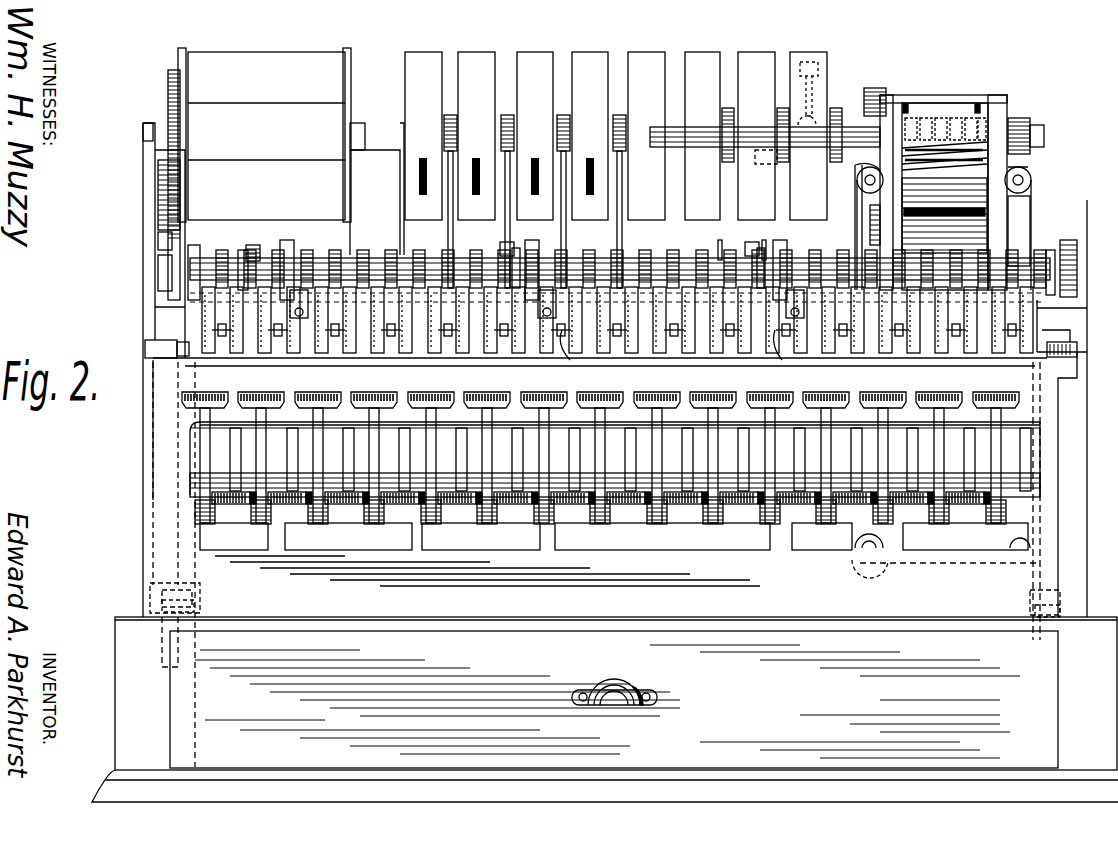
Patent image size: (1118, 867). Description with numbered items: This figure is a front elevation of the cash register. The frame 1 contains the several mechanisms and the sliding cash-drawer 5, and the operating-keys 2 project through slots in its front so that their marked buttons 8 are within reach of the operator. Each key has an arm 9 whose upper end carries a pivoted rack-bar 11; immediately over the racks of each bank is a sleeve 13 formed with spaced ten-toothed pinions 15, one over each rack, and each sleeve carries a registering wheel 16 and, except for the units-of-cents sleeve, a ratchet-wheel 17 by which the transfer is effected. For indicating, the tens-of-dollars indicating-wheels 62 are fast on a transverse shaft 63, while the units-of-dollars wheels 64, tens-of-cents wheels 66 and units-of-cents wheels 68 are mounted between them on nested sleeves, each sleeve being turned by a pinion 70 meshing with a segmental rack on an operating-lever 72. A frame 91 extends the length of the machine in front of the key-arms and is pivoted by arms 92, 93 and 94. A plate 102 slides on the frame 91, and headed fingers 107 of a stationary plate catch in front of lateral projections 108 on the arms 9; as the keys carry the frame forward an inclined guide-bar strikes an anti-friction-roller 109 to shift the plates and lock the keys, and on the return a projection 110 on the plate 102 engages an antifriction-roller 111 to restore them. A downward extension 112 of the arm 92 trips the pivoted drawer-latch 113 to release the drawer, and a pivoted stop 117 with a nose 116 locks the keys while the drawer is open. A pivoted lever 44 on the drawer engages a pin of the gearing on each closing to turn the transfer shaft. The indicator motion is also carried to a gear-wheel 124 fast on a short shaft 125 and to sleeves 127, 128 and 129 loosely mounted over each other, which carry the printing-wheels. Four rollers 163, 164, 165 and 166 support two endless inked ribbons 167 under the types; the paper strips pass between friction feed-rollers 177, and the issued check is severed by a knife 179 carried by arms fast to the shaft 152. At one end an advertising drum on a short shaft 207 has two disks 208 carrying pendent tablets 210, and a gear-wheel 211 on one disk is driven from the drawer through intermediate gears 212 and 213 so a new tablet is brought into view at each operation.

The frame 1 is at (1093, 395).
The operating-keys 2 is at (270, 432).
The sliding cash-drawer 5 is at (614, 699).
The buttons 8 is at (252, 396).
The arm 9 is at (345, 432).
The rack-bar 11 is at (318, 287).
The sleeve 13 is at (157, 268).
The pinions 15 is at (366, 258).
The registering wheel 16 is at (200, 250).
The ratchet-wheel 17 is at (246, 250).
The pivoted lever 44 is at (170, 645).
The tens-of-dollars indicating-wheels 62 is at (424, 43).
The transverse shaft 63 is at (400, 120).
The units-of-dollars indicating-wheels 64 is at (478, 55).
The tens-of-cents indicating-wheels 66 is at (538, 55).
The units-of-cents wheels 68 is at (594, 55).
The pinion 70 is at (450, 113).
The operating-levers 72 is at (550, 219).
The frame 91 is at (615, 437).
The arm 92 is at (190, 438).
The arm 93 is at (412, 537).
The arm 94 is at (903, 537).
The plate 102 is at (482, 330).
The headed fingers 107 is at (669, 354).
The lateral projections 108 is at (495, 330).
The anti-friction-roller 109 is at (1078, 345).
The projection 110 is at (172, 362).
The antifriction-roller 111 is at (148, 349).
The downward extension 112 is at (180, 547).
The drawer-latch 113 is at (196, 610).
The nose 116 is at (950, 566).
The pivoted stop 117 is at (1035, 610).
The gear-wheel 124 is at (728, 106).
The short shaft 125 is at (723, 240).
The sleeve 127 is at (761, 240).
The sleeve 128 is at (788, 163).
The sleeve 129 is at (876, 86).
The shaft 152 is at (906, 102).
The roller 163 is at (1016, 501).
The roller 164 is at (1033, 184).
The roller 165 is at (855, 178).
The roller 166 is at (850, 537).
The endless inked ribbons 167 is at (1030, 204).
The friction feed-roller 177 is at (988, 188).
The knife 179 is at (944, 133).
The short shaft 207 is at (143, 139).
The disks 208 is at (185, 38).
The pendent tablets 210 is at (195, 75).
The gear-wheel 211 is at (175, 100).
The intermediate gear 212 is at (158, 238).
The intermediate gear 213 is at (160, 196).